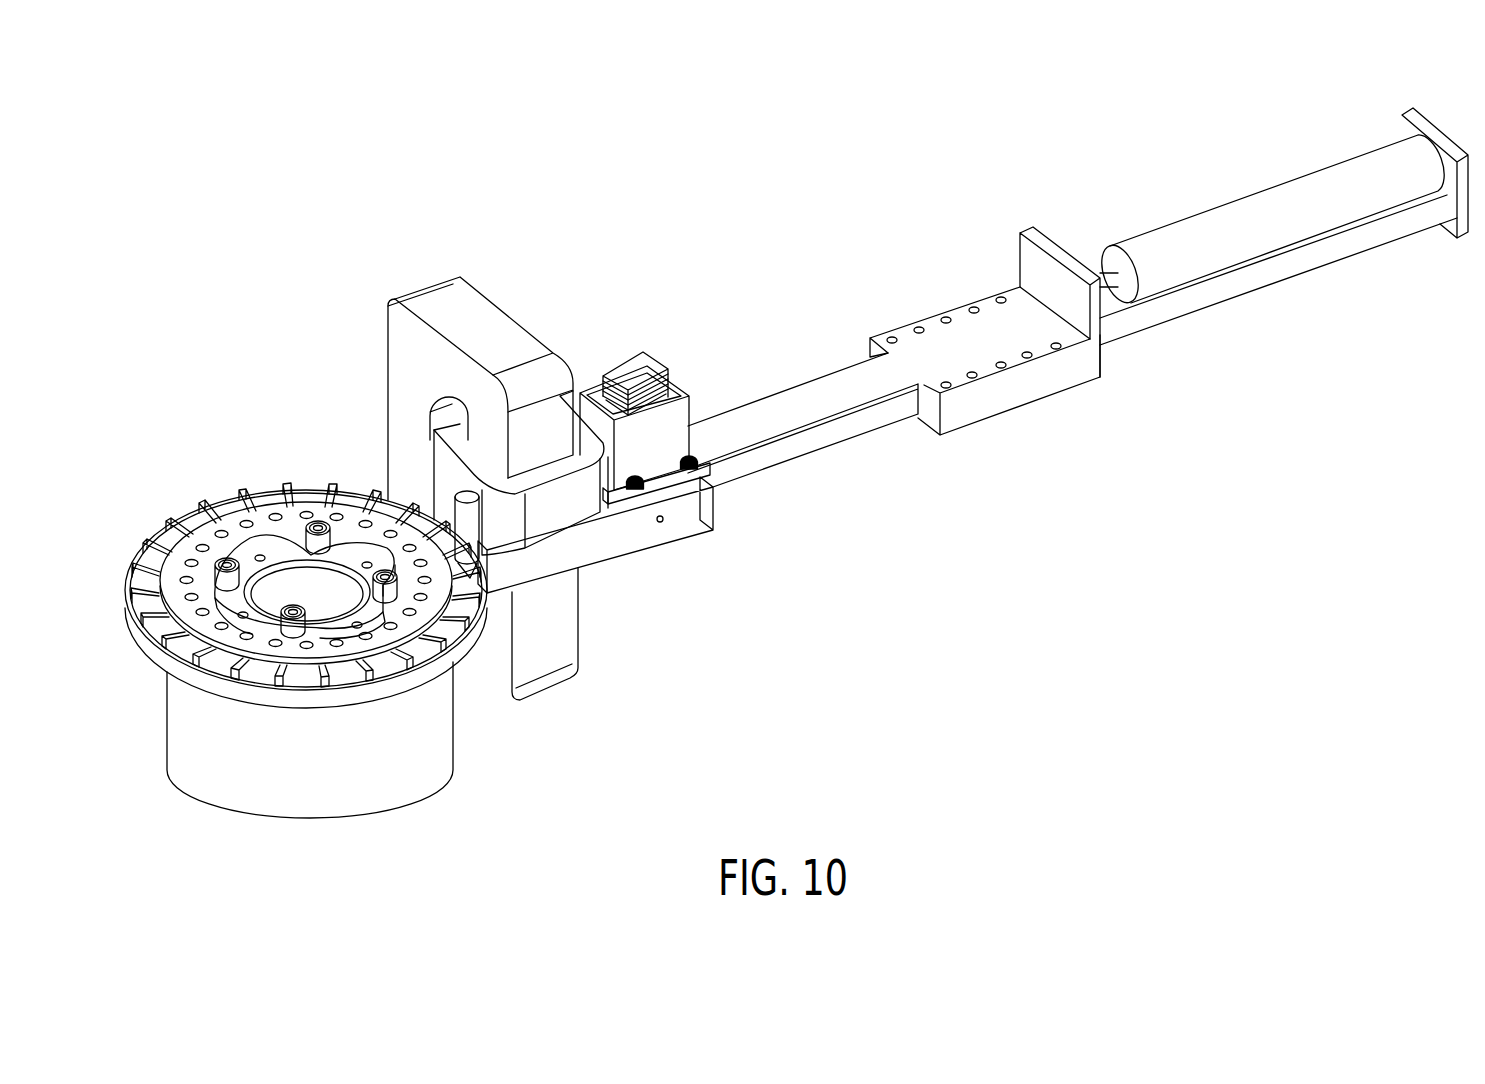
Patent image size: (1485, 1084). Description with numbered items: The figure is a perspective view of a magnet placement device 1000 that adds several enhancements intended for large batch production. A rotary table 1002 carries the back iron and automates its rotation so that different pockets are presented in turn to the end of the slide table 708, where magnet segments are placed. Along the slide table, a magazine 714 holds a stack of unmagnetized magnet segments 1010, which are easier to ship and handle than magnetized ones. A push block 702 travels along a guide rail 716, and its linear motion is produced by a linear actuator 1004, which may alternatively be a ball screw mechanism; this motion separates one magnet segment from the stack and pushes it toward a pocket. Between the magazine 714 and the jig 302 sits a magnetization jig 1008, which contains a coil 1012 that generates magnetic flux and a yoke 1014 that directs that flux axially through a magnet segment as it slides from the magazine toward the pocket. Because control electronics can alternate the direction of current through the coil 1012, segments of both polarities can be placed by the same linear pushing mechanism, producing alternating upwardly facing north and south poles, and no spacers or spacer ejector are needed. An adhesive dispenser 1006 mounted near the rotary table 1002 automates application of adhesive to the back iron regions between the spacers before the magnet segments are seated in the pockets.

The magnet placement device 1000 is at (394, 194).
The jig 302 is at (210, 540).
The push block 702 is at (937, 327).
The slide table 708 is at (692, 512).
The magazine 714 is at (682, 417).
The guide rail 716 is at (1123, 323).
The rotary table 1002 is at (175, 708).
The linear actuator 1004 is at (1272, 200).
The adhesive dispenser 1006 is at (470, 518).
The magnetization jig 1008 is at (358, 353).
The unmagnetized magnet segments 1010 is at (632, 367).
The coil 1012 is at (403, 412).
The yoke 1014 is at (445, 488).